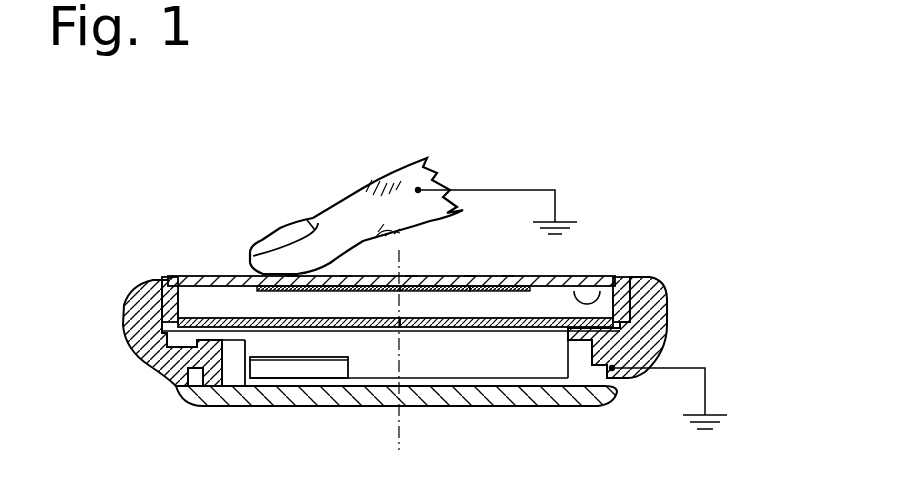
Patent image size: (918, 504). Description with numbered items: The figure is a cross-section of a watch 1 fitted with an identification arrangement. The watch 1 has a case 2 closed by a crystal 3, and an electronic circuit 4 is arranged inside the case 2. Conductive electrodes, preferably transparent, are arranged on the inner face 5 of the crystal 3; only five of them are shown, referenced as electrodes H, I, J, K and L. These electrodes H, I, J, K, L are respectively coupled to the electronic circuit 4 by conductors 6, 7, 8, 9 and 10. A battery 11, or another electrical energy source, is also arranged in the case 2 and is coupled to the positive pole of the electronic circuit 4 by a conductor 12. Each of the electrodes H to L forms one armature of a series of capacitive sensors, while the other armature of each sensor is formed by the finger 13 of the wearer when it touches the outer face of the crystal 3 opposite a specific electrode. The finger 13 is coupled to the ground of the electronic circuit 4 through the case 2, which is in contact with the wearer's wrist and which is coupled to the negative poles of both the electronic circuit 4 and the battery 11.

The watch 1 is at (688, 245).
The case 2 is at (135, 332).
The crystal 3 is at (198, 280).
The electronic circuit 4 is at (443, 268).
The inner face 5 is at (605, 275).
The conductor 6 is at (250, 313).
The conductor 7 is at (316, 303).
The conductor 8 is at (387, 287).
The conductor 9 is at (437, 291).
The conductor 10 is at (486, 291).
The battery 11 is at (298, 381).
The conductor 12 is at (246, 336).
The finger 13 is at (404, 163).
The electrode H is at (292, 274).
The electrode I is at (346, 274).
The electrode J is at (411, 275).
The electrode K is at (470, 274).
The electrode L is at (508, 274).